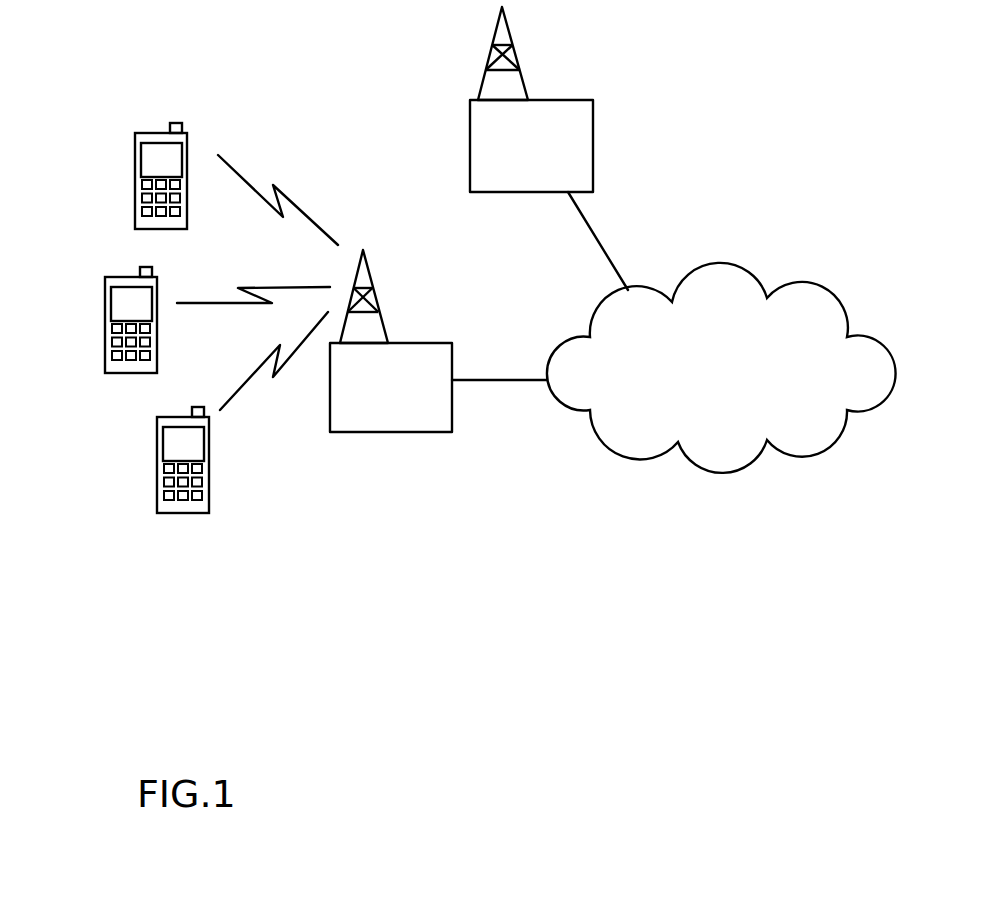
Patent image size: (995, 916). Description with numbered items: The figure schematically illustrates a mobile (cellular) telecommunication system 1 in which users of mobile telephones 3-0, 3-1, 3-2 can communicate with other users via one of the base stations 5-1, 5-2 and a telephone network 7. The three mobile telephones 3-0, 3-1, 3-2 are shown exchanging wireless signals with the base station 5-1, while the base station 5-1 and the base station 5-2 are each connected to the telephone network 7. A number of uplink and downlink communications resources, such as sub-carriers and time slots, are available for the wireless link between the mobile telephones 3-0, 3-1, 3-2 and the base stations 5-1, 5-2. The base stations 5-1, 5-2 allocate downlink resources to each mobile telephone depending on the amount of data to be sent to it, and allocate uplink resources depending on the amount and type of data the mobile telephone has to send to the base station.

The mobile telecommunication system 1 is at (461, 330).
The mobile telephone 3-0 is at (140, 223).
The mobile telephone 3-1 is at (113, 365).
The mobile telephone 3-2 is at (167, 507).
The base station 5-1 is at (403, 358).
The base station 5-2 is at (578, 118).
The telephone network 7 is at (727, 283).